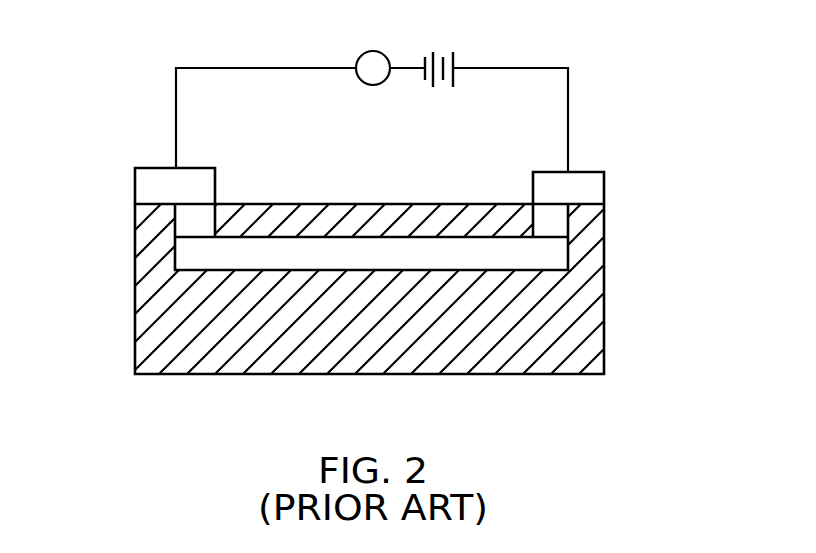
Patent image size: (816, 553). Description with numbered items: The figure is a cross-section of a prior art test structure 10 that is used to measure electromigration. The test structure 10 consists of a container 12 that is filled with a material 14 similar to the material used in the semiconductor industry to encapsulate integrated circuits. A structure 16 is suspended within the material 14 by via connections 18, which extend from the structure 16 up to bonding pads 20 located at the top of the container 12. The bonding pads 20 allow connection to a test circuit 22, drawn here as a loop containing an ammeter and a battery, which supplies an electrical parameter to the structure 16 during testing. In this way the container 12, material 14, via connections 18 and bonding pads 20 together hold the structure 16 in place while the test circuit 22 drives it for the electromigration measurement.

The test structure 10 is at (66, 198).
The container 12 is at (603, 268).
The material 14 is at (550, 318).
The structure 16 is at (405, 257).
The via connections 18 is at (192, 222).
The bonding pads 20 is at (163, 187).
The test circuit 22 is at (423, 48).